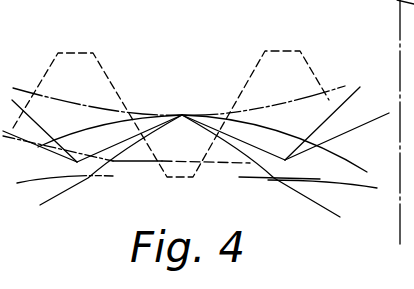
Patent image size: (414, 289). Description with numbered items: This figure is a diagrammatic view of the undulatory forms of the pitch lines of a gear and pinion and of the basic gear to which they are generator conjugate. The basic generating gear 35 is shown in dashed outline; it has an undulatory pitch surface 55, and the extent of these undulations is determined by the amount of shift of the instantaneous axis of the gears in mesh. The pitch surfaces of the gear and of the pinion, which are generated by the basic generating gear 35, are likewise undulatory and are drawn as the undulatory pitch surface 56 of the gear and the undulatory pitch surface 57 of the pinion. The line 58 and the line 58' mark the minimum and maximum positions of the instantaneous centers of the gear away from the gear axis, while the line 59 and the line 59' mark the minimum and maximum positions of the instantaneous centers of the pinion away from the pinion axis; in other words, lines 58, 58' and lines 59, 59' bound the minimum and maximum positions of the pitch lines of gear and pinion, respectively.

The basic generating gear 35 is at (280, 50).
The undulatory pitch surface 55 is at (53, 153).
The undulatory pitch surface of the gear 56 is at (347, 100).
The undulatory pitch surface of the pinion 57 is at (341, 182).
The minimum position line of gear instantaneous centers 58 is at (263, 93).
The maximum position line of gear instantaneous centers 58' is at (126, 175).
The minimum position line of pinion instantaneous centers 59 is at (276, 194).
The maximum position line of pinion instantaneous centers 59' is at (110, 114).